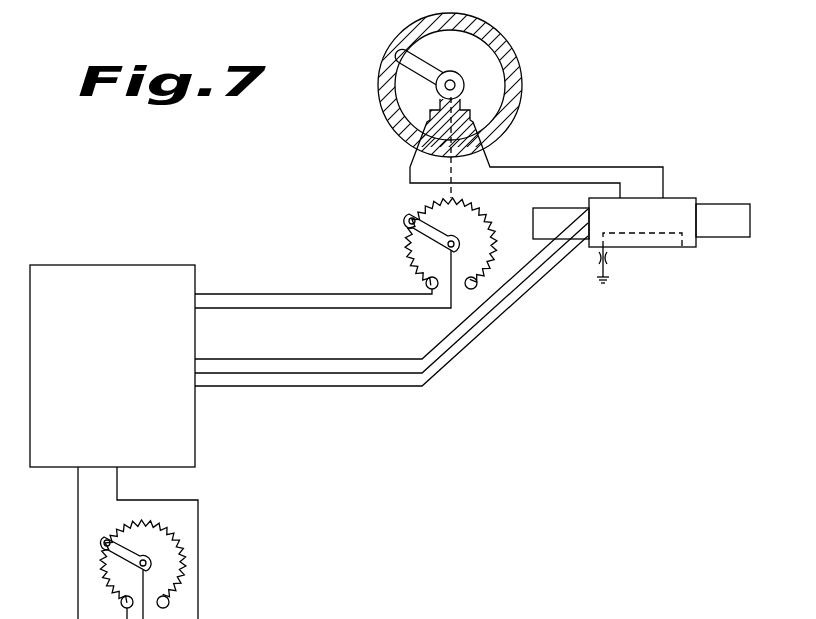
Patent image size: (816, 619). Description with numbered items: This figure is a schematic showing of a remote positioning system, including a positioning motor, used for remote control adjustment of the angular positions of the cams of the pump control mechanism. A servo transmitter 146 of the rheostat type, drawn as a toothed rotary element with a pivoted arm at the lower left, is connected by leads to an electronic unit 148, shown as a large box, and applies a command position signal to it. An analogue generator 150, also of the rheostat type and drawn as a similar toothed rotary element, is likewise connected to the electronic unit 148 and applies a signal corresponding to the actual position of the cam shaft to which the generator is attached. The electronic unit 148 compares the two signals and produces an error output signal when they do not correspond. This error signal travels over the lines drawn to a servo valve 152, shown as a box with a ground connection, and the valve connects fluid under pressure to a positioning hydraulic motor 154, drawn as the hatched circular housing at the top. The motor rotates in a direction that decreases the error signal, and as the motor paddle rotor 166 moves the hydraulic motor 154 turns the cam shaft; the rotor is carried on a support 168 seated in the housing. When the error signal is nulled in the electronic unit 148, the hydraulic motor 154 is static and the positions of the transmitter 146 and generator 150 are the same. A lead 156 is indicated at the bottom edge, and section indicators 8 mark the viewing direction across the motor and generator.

The servo transmitter 146 is at (160, 552).
The electronic unit 148 is at (122, 375).
The analogue generator 150 is at (466, 229).
The servo valve 152 is at (658, 230).
The positioning hydraulic motor 154 is at (508, 33).
The lead 156 is at (258, 617).
The motor paddle rotor 166 is at (416, 60).
The wheel support 168 is at (420, 121).
The section line 8 is at (448, 84).